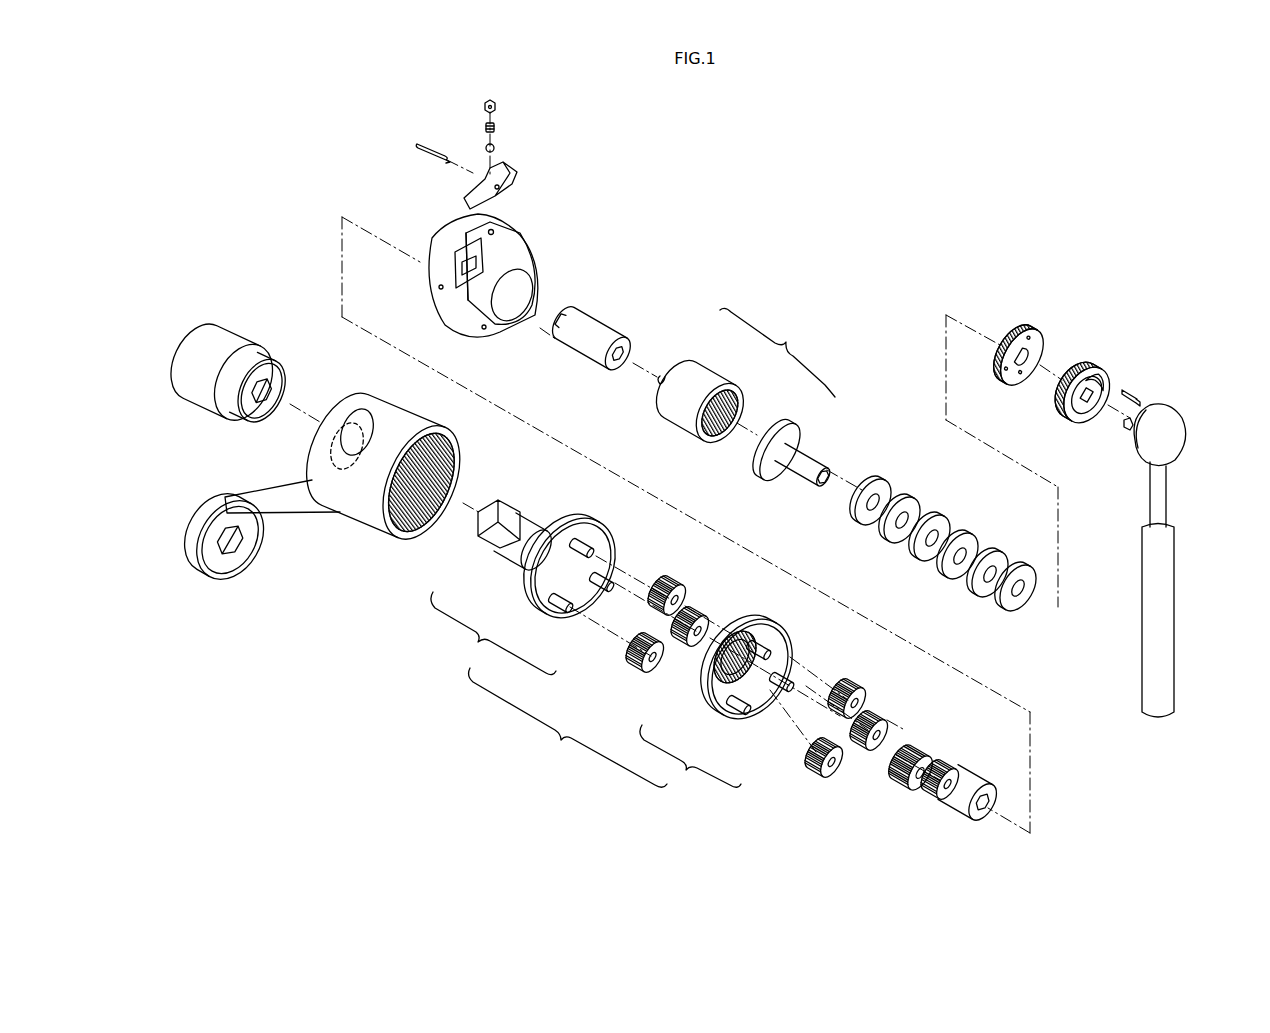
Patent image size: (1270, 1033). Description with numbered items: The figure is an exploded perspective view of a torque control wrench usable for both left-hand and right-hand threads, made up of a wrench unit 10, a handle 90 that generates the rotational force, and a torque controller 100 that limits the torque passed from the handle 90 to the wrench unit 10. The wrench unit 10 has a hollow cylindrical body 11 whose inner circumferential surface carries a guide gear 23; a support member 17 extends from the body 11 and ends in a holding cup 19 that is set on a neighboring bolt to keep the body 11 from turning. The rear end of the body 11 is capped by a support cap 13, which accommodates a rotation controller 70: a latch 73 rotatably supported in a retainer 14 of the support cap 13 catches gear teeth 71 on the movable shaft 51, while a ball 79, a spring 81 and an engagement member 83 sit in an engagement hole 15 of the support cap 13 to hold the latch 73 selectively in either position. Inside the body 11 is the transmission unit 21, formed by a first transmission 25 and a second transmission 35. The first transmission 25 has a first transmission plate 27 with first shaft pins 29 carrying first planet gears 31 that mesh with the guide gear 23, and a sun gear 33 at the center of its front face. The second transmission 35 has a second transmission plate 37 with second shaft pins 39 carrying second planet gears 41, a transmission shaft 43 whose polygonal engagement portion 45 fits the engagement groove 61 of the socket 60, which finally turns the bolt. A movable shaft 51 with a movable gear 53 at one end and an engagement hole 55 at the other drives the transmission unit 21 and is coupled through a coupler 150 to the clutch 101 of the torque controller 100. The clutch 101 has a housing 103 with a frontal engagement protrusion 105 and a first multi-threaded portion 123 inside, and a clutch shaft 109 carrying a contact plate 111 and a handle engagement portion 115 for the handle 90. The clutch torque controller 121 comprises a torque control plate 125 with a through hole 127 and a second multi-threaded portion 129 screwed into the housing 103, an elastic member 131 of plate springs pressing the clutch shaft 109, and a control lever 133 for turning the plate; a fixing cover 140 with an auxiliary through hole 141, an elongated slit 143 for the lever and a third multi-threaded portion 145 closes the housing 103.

The wrench unit 10 is at (488, 727).
The body 11 is at (344, 494).
The support cap 13 is at (487, 287).
The retainer 14 is at (468, 263).
The engagement hole 15 is at (494, 232).
The support member 17 is at (296, 510).
The holding cup 19 is at (222, 565).
The transmission unit 21 is at (568, 727).
The guide gear 23 is at (443, 465).
The first transmission 25 is at (724, 693).
The first transmission plate 27 is at (725, 688).
The first shaft pins 29 is at (738, 708).
The first planet gears 31 is at (810, 764).
The sun gear 33 is at (722, 672).
The second transmission 35 is at (531, 586).
The second transmission plate 37 is at (548, 585).
The second shaft pins 39 is at (562, 606).
The second planet gears 41 is at (632, 662).
The transmission shaft 43 is at (518, 560).
The engagement portion 45 is at (490, 548).
The movable shaft 51 is at (952, 765).
The movable gear 53 is at (907, 755).
The engagement hole 55 is at (977, 798).
The socket 60 is at (251, 359).
The engagement groove 61 is at (287, 388).
The rotation controller 70 is at (507, 154).
The gear teeth 71 is at (940, 772).
The latch 73 is at (513, 180).
The ball 79 is at (495, 148).
The spring 81 is at (495, 128).
The engagement member 83 is at (497, 107).
The handle 90 is at (1175, 530).
The torque controller 100 is at (822, 232).
The clutch 101 is at (777, 352).
The housing 103 is at (694, 386).
The engagement protrusion 105 is at (660, 381).
The clutch shaft 109 is at (810, 454).
The contact plate 111 is at (780, 465).
The handle engagement portion 115 is at (826, 466).
The clutch torque controller 121 is at (896, 326).
The first multi-threaded portion 123 is at (735, 398).
The torque control plate 125 is at (1043, 336).
The through hole 127 is at (1030, 357).
The second multi-threaded portion 129 is at (1022, 330).
The elastic member 131 is at (908, 512).
The control lever 133 is at (1140, 400).
The fixing cover 140 is at (1082, 408).
The auxiliary through hole 141 is at (1095, 412).
The elongated slit 143 is at (1103, 378).
The third multi-threaded portion 145 is at (1063, 404).
The coupler 150 is at (592, 330).